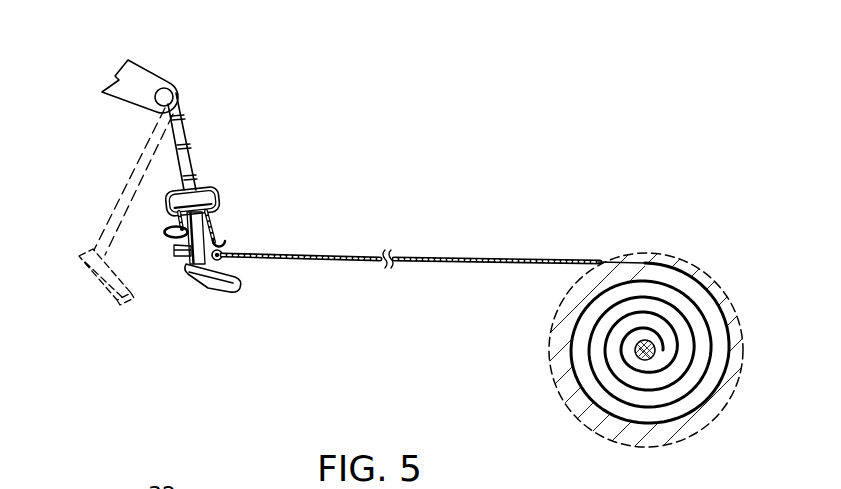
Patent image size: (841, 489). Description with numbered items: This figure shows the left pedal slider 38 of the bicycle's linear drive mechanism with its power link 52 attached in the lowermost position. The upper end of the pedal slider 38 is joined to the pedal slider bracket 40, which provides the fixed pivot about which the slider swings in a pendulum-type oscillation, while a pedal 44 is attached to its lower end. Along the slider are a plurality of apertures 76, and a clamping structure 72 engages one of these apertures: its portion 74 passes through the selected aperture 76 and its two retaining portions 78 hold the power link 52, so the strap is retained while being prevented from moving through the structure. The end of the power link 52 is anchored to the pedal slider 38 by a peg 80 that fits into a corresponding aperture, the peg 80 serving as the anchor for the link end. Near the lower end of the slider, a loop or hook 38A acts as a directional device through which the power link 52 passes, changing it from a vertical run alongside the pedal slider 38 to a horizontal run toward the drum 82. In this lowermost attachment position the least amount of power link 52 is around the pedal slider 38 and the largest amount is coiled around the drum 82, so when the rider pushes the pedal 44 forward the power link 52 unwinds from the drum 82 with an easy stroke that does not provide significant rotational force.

The pedal slider bracket 40 is at (140, 84).
The left pedal slider 38 is at (178, 94).
The loop or hook 38A is at (164, 232).
The apertures 76 is at (188, 112).
The portion 74 is at (220, 186).
The clamping structure 72 is at (222, 186).
The retaining portions 78 is at (222, 200).
The peg 80 is at (176, 257).
The pedal 44 is at (228, 293).
The power link 52 is at (434, 257).
The drum 82 is at (643, 252).